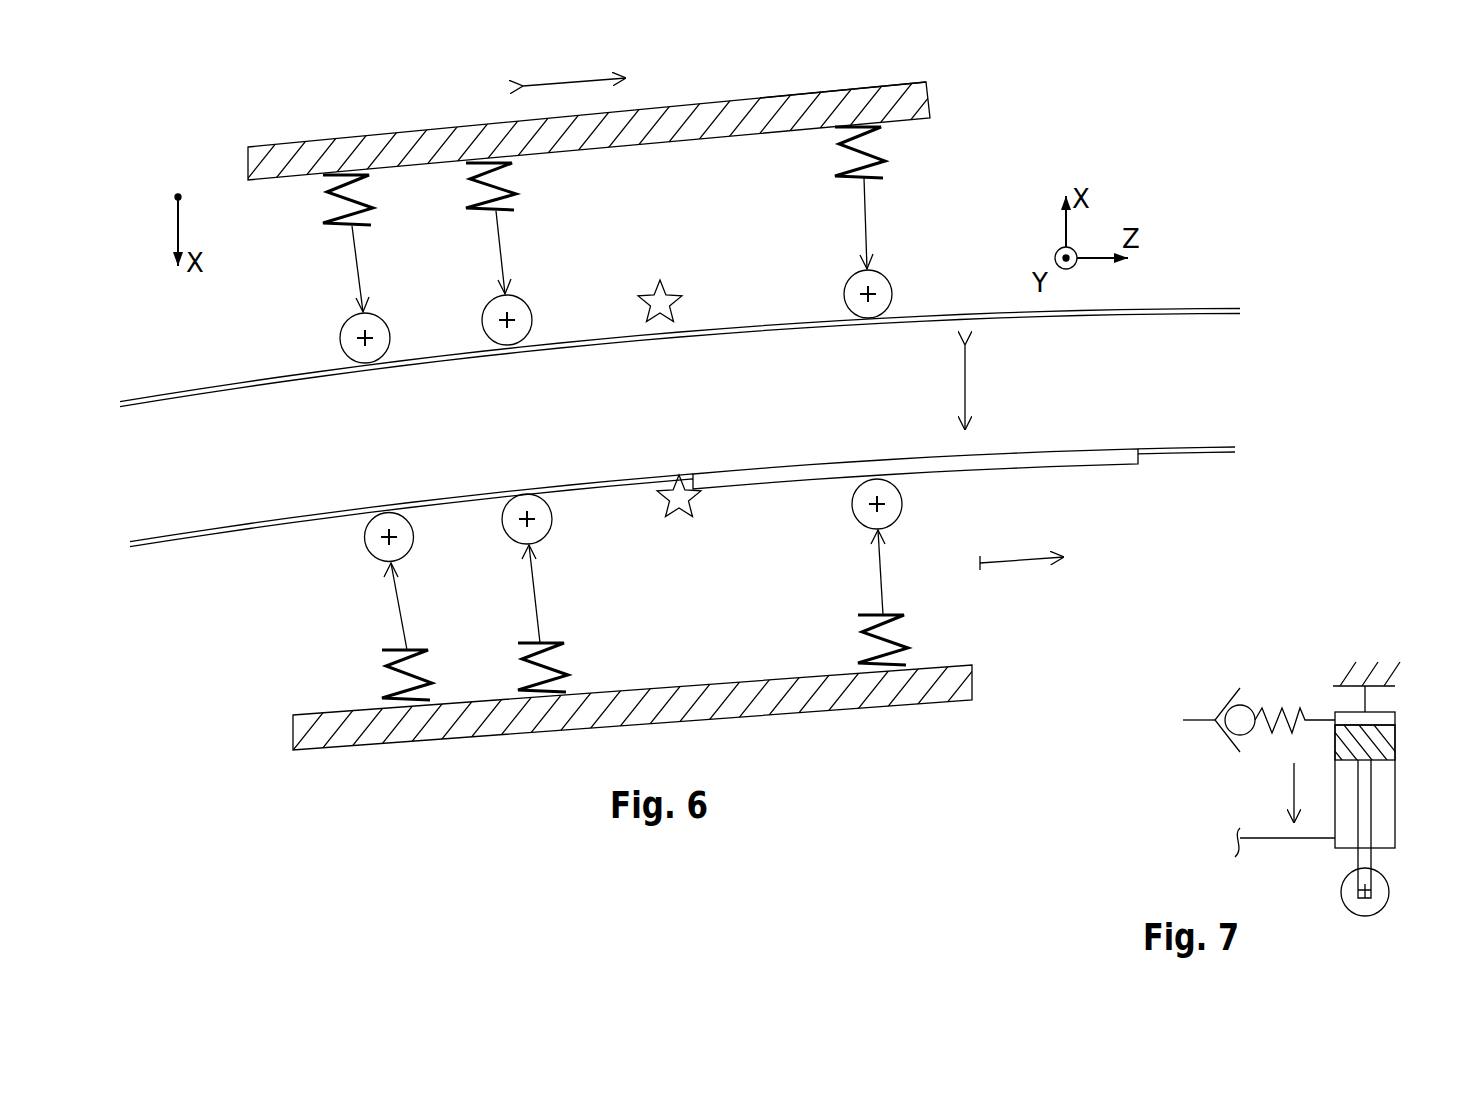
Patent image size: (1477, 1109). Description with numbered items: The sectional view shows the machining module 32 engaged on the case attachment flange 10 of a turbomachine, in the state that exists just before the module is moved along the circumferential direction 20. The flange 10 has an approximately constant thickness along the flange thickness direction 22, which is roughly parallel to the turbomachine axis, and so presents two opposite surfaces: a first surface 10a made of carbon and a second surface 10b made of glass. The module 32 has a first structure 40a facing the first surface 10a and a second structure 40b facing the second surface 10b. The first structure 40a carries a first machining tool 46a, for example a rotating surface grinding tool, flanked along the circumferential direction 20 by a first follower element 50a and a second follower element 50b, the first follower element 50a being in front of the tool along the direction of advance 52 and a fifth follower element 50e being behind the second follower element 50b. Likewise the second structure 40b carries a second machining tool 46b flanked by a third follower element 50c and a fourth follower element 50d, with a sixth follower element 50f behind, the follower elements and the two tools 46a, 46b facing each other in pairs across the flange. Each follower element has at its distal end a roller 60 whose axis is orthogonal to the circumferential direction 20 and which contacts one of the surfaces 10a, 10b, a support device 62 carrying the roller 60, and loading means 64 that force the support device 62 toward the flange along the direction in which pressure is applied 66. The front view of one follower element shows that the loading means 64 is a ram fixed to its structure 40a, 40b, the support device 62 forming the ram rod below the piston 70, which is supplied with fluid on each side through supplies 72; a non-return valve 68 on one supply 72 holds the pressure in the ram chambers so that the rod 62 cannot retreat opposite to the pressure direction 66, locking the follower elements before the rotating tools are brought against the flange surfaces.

In FIG. 6, the attachment flange 10 is at (677, 456).
In FIG. 6, the first surface 10a is at (240, 531).
In FIG. 6, the second surface 10b is at (263, 380).
In FIG. 6, the circumferential direction 20 is at (573, 84).
In FIG. 6, the flange thickness direction 22 is at (966, 387).
In FIG. 6, the machining module 32 is at (857, 86).
In FIG. 6, the first structure 40a is at (336, 749).
In FIG. 7, the first structure 40a is at (1349, 646).
In FIG. 6, the second structure 40b is at (298, 142).
In FIG. 7, the second structure 40b is at (1370, 664).
In FIG. 6, the first machining tool 46a is at (689, 516).
In FIG. 6, the second machining tool 46b is at (682, 298).
In FIG. 6, the first follower element 50a is at (915, 573).
In FIG. 6, the second follower element 50b is at (566, 584).
In FIG. 6, the third follower element 50c is at (898, 216).
In FIG. 6, the fourth follower element 50d is at (570, 288).
In FIG. 6, the fifth follower element 50e is at (372, 610).
In FIG. 6, the sixth follower element 50f is at (328, 267).
In FIG. 6, the direction of advance 52 is at (1018, 560).
In FIG. 6, the roller 60 is at (372, 352).
In FIG. 7, the roller 60 is at (1358, 907).
In FIG. 6, the support device 62 is at (357, 257).
In FIG. 7, the support device 62 is at (1363, 820).
In FIG. 6, the loading means 64 is at (340, 198).
In FIG. 7, the loading means 64 is at (1402, 783).
In FIG. 6, the direction in which pressure is applied 66 is at (367, 297).
In FIG. 7, the direction in which pressure is applied 66 is at (1293, 775).
In FIG. 7, the non-return valve 68 is at (1258, 697).
In FIG. 7, the piston 70 is at (1385, 733).
In FIG. 7, the supplies 72 is at (1197, 720).